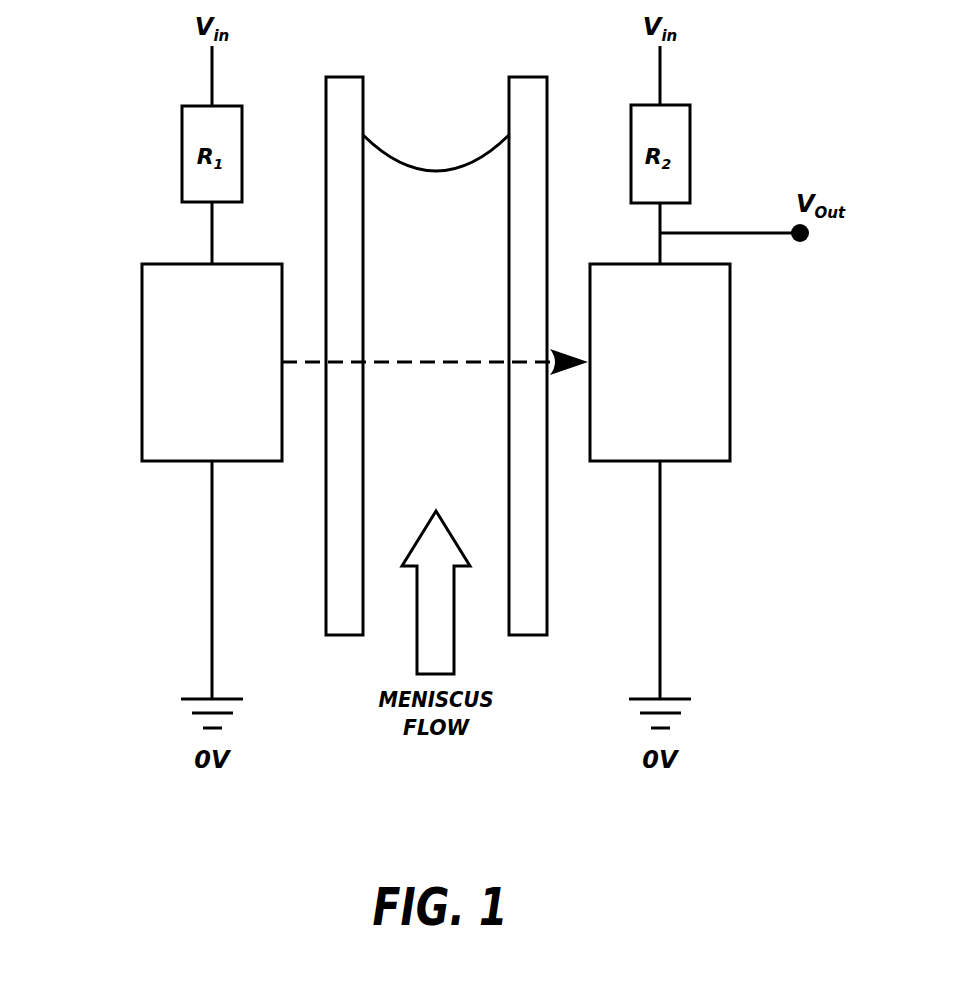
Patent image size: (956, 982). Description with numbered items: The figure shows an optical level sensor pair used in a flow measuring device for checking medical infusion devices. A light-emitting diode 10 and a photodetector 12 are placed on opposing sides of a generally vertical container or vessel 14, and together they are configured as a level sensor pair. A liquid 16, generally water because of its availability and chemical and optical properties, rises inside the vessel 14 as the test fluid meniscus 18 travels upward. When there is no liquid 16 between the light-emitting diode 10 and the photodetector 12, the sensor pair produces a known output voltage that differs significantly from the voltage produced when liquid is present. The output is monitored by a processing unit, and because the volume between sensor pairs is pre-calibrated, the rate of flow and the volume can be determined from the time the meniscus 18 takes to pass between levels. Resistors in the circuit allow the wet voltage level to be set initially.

The light-emitting diode 10 is at (142, 328).
The photodetector 12 is at (731, 327).
The vessel 14 is at (543, 110).
The liquid 16 is at (380, 216).
The meniscus 18 is at (437, 170).